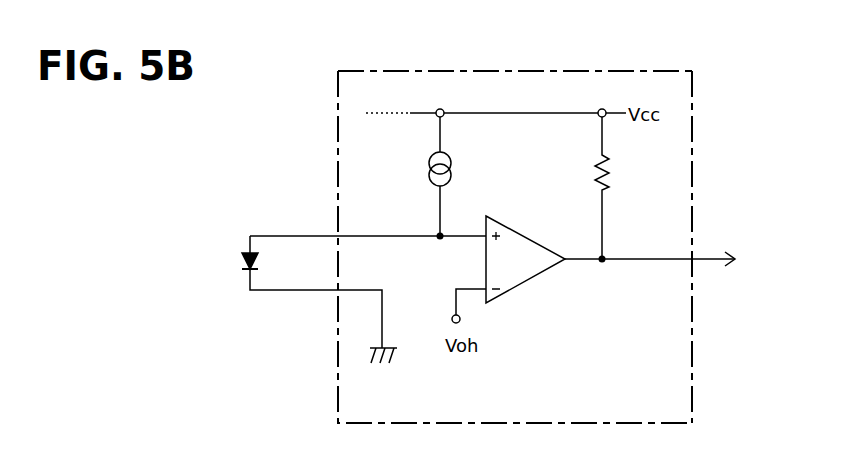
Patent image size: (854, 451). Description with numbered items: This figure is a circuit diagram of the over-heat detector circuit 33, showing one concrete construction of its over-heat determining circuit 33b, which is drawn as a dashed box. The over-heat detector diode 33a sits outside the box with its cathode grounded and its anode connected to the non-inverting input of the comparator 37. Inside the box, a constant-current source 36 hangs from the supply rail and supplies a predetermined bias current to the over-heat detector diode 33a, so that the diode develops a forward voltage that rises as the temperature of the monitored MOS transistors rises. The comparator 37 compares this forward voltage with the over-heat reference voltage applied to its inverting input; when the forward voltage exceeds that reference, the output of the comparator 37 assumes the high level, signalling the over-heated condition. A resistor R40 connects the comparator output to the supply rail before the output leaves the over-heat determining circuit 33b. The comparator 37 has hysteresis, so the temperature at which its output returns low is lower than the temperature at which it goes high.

The over-heat detector circuit 33 is at (740, 64).
The over-heat detector diode 33a is at (237, 262).
The over-heat determining circuit 33b is at (692, 375).
The constant-current source 36 is at (455, 166).
The comparator 37 is at (530, 238).
The resistor R40 is at (616, 177).